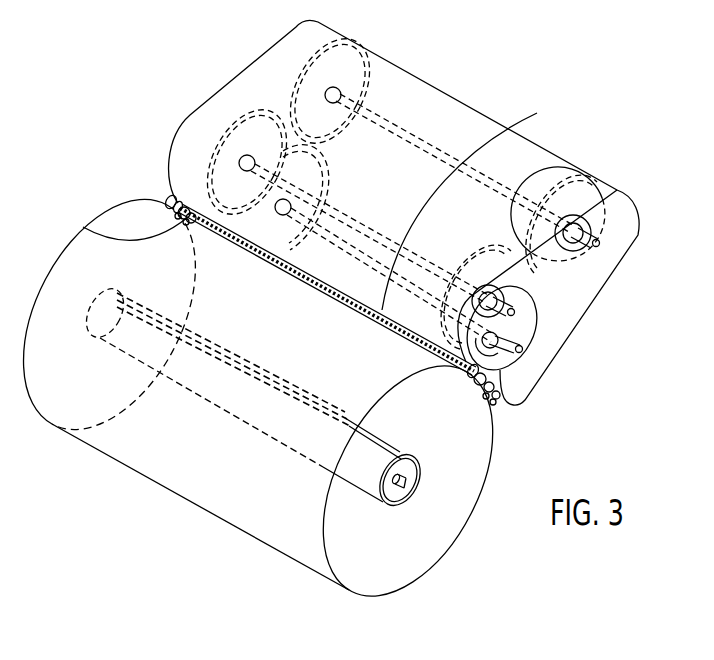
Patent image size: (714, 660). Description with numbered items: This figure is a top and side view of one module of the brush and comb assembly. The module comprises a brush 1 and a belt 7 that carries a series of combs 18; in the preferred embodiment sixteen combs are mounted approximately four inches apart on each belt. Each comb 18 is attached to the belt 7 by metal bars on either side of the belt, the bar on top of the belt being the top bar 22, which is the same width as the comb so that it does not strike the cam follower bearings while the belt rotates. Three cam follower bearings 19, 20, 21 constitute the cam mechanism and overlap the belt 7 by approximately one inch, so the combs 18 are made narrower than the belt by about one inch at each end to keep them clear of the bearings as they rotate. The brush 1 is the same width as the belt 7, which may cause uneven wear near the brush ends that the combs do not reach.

The brush 1 is at (397, 563).
The belt 7 is at (608, 288).
The comb 18 is at (478, 398).
The cam follower bearing 19 is at (176, 200).
The cam follower bearing 20 is at (198, 217).
The cam follower bearing 21 is at (90, 231).
The top bar 22 is at (537, 113).